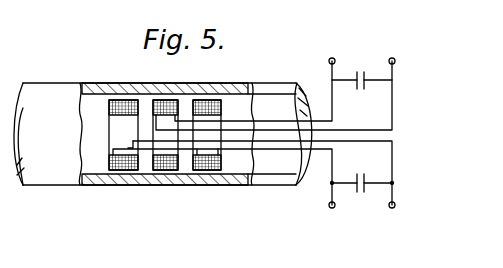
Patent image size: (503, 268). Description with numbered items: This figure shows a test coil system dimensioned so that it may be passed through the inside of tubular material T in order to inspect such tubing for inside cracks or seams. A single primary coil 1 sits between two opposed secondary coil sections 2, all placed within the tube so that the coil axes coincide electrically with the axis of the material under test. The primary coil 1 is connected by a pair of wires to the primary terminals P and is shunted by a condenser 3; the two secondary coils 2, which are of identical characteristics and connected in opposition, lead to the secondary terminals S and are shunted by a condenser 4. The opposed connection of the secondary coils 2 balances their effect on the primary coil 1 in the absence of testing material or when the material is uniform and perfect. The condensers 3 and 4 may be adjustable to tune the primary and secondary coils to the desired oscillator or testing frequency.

The primary coil 1 is at (170, 170).
The secondary coil sections 2 is at (125, 170).
The condenser 3 is at (361, 90).
The condenser 4 is at (361, 174).
The primary terminals P is at (389, 58).
The secondary terminals S is at (389, 208).
The tube T is at (273, 174).